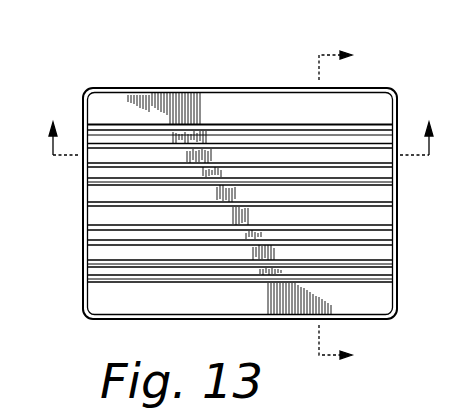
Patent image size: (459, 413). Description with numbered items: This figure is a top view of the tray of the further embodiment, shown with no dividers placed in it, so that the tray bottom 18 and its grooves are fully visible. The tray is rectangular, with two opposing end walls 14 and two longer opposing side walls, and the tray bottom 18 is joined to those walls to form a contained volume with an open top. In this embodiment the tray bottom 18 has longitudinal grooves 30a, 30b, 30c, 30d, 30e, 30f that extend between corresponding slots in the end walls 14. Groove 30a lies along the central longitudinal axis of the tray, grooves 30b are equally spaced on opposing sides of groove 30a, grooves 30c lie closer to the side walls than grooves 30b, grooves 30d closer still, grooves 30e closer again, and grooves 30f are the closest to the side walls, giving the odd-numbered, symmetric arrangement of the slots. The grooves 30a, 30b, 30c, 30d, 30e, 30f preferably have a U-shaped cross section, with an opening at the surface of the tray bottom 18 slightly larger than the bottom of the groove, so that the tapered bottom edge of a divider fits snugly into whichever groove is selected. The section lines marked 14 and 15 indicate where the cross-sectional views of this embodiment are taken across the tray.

The tray bottom 18 is at (248, 107).
The longitudinal groove 30a is at (187, 207).
The longitudinal groove 30b is at (177, 183).
The longitudinal groove 30c is at (157, 165).
The longitudinal groove 30d is at (152, 147).
The longitudinal groove 30e is at (128, 135).
The longitudinal groove 30f is at (110, 125).
The end wall 14 is at (247, 124).
The section line 15- 15 is at (357, 205).